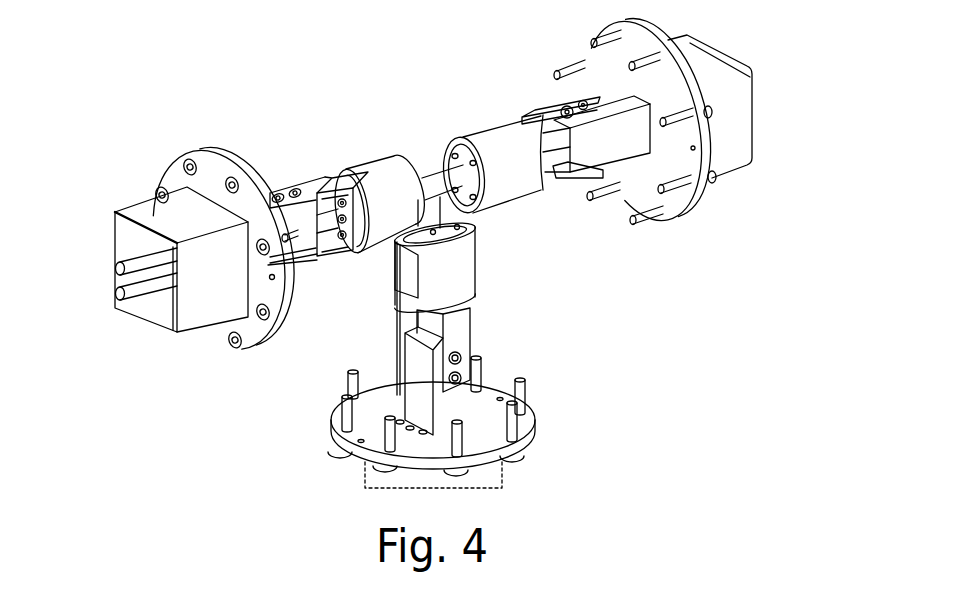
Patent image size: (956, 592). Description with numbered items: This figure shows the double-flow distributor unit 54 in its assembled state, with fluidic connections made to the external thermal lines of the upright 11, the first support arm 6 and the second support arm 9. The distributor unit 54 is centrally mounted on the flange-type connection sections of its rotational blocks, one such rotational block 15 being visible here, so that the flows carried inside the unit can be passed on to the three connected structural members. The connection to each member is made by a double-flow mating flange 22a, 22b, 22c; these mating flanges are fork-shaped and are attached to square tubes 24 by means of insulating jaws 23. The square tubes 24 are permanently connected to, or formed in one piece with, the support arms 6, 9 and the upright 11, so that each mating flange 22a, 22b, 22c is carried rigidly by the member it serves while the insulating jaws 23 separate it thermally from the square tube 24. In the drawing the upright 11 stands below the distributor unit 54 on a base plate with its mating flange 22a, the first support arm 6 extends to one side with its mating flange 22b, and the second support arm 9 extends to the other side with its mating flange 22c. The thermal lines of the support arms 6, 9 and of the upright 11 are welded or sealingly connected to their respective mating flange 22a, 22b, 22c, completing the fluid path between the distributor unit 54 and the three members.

The distributor unit 54 is at (399, 93).
The second support arm 9 is at (236, 152).
The square tubes 24 is at (313, 215).
The mating flange 22a is at (458, 328).
The mating flange 22b is at (542, 120).
The mating flange 22c is at (330, 257).
The insulating jaws 23 is at (573, 195).
The first support arm 6 is at (733, 167).
The rotational block 15 is at (413, 268).
The upright 11 is at (540, 427).